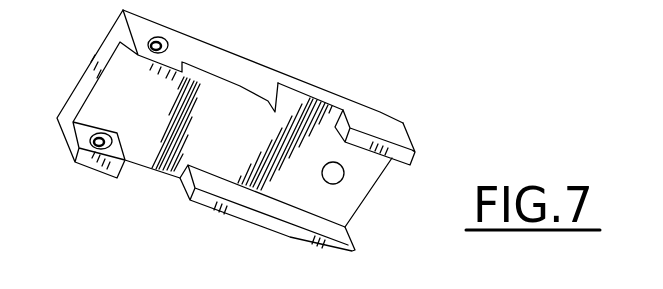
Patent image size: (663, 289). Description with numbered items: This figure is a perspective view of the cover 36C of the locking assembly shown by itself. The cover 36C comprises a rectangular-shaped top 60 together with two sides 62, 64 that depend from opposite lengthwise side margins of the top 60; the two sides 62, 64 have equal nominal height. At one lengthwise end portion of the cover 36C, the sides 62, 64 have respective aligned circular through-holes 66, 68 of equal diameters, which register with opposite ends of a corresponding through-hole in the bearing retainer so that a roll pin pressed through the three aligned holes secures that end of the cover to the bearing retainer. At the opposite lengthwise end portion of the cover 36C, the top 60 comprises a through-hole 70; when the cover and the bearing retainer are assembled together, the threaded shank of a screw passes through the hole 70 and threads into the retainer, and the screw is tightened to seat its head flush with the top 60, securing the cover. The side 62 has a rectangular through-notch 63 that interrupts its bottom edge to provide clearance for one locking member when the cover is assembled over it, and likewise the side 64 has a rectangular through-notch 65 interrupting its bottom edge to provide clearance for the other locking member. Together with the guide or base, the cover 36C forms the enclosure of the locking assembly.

The top 60 is at (89, 65).
The side 62 is at (240, 57).
The rectangular through-notch 63 is at (317, 98).
The side 64 is at (273, 225).
The rectangular through-notch 65 is at (157, 182).
The circular through-hole 66 is at (167, 43).
The circular through-hole 68 is at (85, 164).
The through-hole 70 is at (343, 181).
The cover 36C is at (408, 118).